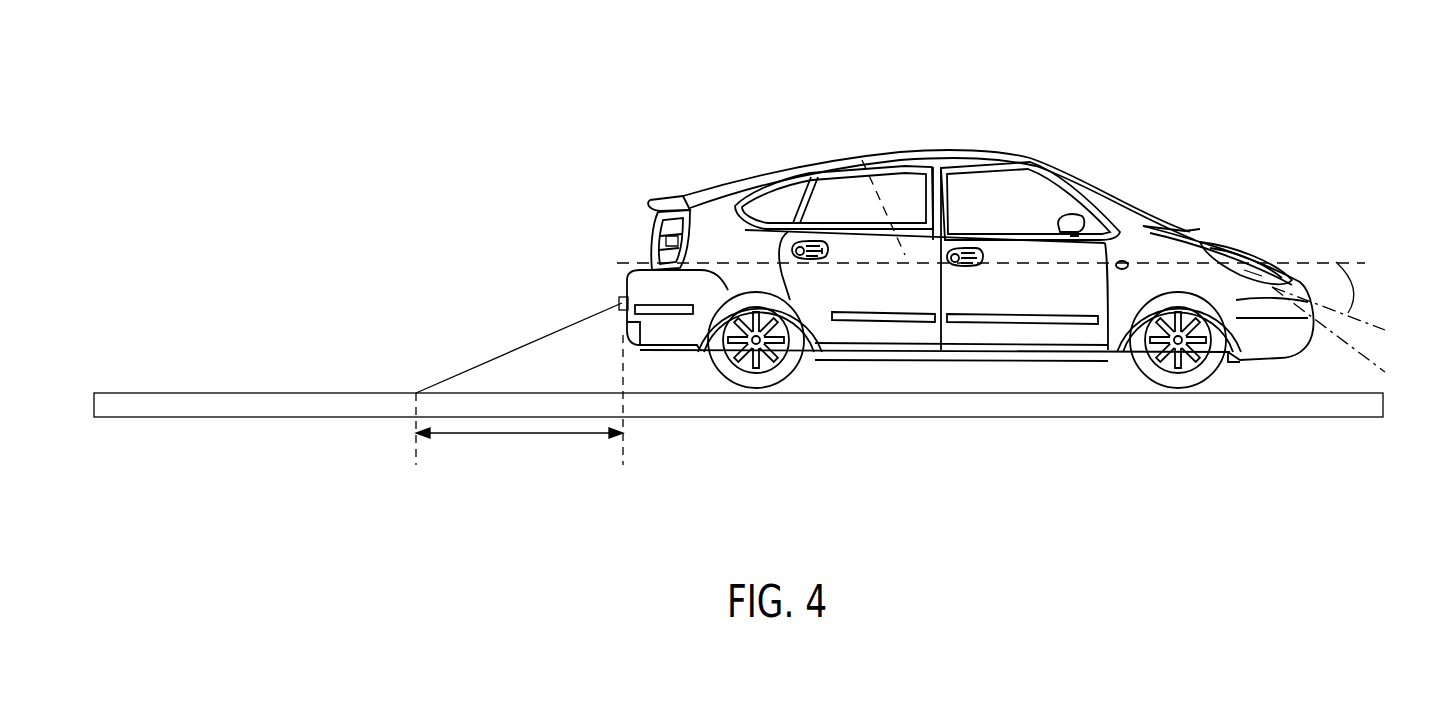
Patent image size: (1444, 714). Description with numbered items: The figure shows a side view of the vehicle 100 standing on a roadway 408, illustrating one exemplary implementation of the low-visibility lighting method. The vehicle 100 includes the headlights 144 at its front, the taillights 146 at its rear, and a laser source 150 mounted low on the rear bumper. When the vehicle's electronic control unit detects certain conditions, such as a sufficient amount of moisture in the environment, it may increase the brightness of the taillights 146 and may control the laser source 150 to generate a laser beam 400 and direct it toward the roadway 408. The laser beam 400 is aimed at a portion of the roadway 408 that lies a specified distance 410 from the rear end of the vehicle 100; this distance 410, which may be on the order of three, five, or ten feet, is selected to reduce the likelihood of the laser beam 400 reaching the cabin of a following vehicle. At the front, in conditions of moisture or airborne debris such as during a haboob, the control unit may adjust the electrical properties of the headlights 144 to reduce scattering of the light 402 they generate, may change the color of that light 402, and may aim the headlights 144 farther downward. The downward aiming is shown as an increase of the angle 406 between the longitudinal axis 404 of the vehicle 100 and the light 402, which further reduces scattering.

The vehicle 100 is at (964, 101).
The headlights 144 is at (1253, 272).
The taillights 146 is at (650, 241).
The laser source 150 is at (619, 302).
The laser beam 400 is at (478, 366).
The light 402 is at (1322, 292).
The longitudinal axis 404 is at (862, 160).
The angle 406 is at (1354, 286).
The roadway 408 is at (300, 393).
The distance 410 is at (520, 437).